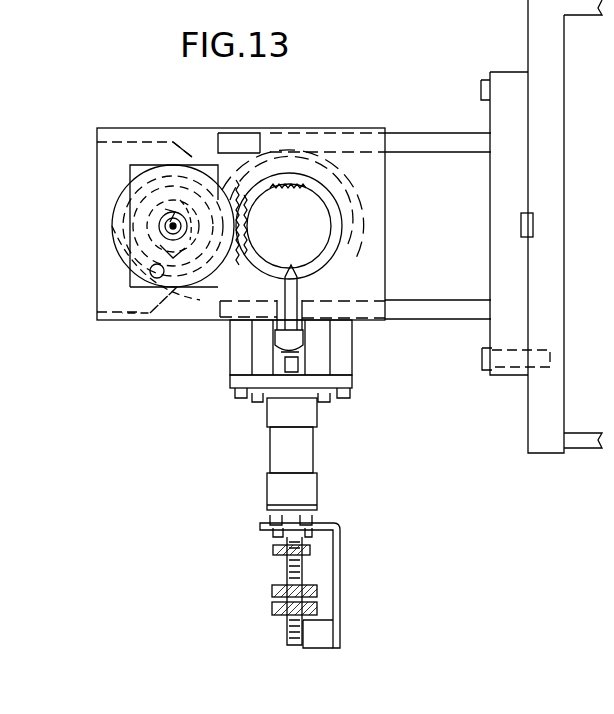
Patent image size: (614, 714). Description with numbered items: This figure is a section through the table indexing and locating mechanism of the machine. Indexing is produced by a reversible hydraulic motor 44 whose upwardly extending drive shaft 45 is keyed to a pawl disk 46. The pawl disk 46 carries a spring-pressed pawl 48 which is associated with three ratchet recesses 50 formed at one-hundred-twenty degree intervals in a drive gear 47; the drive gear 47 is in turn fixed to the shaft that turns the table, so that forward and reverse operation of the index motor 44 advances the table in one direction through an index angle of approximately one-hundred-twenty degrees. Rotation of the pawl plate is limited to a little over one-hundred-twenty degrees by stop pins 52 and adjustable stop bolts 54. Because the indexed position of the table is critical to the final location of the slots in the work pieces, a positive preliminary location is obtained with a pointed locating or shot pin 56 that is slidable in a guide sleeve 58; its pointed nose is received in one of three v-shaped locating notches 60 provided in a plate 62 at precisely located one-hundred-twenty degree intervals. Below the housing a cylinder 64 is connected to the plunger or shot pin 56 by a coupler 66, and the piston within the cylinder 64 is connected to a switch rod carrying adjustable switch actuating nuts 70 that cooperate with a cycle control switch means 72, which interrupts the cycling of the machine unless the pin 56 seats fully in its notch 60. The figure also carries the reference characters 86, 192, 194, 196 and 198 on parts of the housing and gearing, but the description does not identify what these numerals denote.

The reversible hydraulic motor 44 is at (133, 230).
The drive shaft 45 is at (260, 222).
The pawl disk 46 is at (243, 213).
The drive gear 47 is at (195, 205).
The spring-pressed pawl 48 is at (140, 263).
The ratchet recesses 50 is at (150, 195).
The stop pins 52 is at (102, 304).
The adjustable stop bolts 54 is at (163, 283).
The shot pin 56 is at (307, 293).
The guide sleeve 58 is at (270, 290).
The v-shaped locating notches 60 is at (330, 200).
The plate 62 is at (330, 240).
The cylinder 64 is at (315, 450).
The coupler 66 is at (307, 343).
The switch actuating nuts 70 is at (317, 590).
The cycle control switch means 72 is at (327, 553).
The hub 86 is at (123, 222).
The housing 192 is at (122, 322).
The frame 194 is at (218, 190).
The ring gear 196 is at (289, 226).
The bearing 198 is at (133, 240).